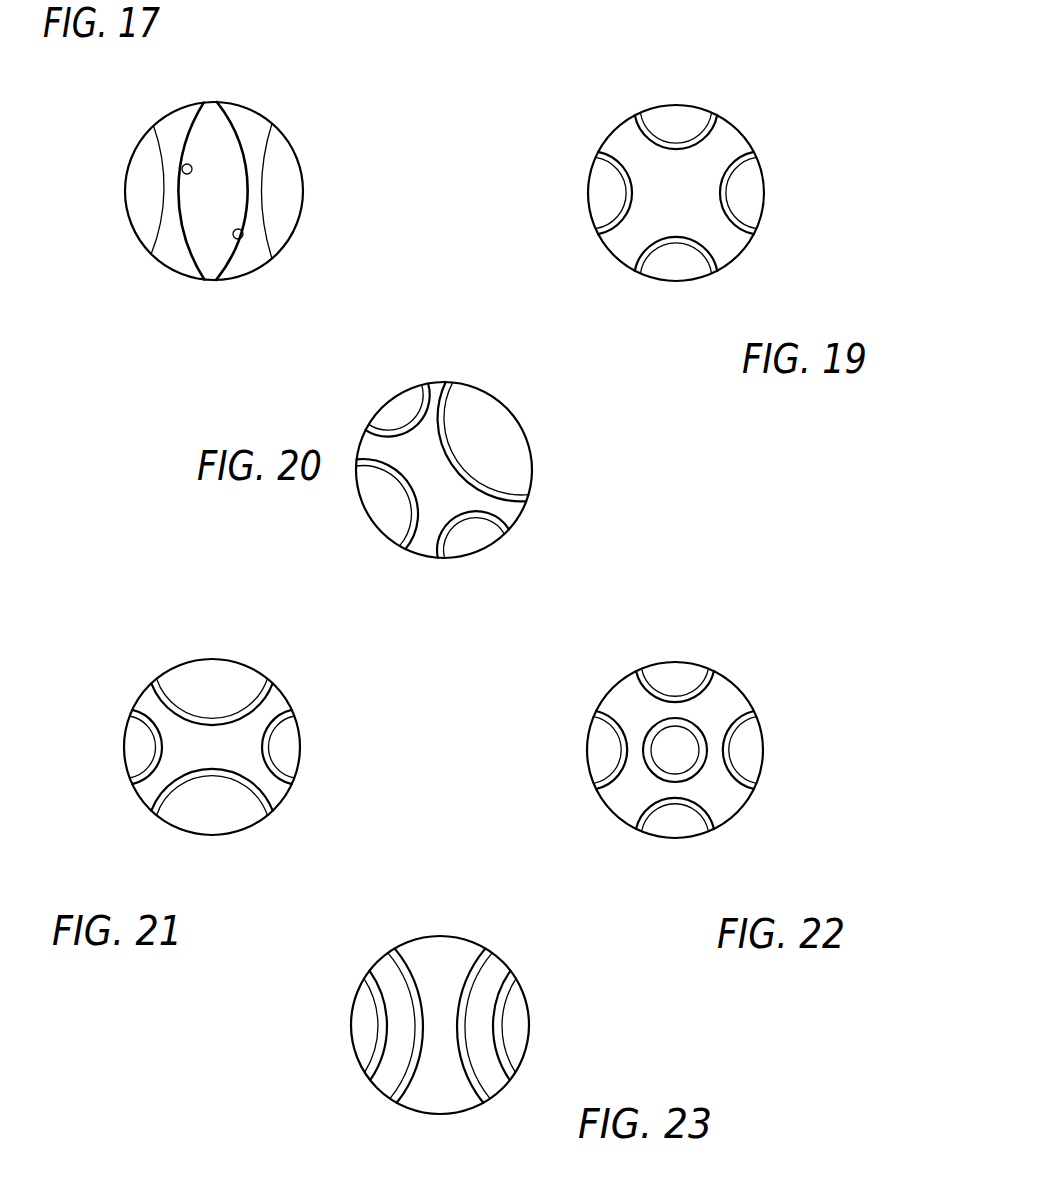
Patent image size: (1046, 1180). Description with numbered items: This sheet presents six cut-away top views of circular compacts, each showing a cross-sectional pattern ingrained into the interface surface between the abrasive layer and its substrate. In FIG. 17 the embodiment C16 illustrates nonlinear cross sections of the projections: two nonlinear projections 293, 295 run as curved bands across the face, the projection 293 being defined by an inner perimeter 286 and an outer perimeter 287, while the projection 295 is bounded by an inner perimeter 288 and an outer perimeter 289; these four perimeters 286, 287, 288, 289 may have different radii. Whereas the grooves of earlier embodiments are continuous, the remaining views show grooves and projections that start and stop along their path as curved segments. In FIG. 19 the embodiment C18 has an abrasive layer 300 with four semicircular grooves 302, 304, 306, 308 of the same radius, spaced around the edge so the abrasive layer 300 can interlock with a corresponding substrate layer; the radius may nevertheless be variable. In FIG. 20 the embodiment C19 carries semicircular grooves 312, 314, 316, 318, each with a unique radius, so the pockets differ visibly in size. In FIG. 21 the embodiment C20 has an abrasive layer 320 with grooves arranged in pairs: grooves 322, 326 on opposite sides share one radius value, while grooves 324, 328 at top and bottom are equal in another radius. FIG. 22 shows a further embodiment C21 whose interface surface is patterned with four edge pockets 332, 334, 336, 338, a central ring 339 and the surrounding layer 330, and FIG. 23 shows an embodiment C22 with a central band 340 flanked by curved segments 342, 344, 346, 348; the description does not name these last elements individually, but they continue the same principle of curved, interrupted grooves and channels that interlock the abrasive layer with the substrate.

In FIG. 17, the embodiment with nonlinear projection cross sections C16 is at (211, 197).
In FIG. 17, the inner perimeter 286 is at (153, 218).
In FIG. 17, the outer perimeter 287 is at (183, 174).
In FIG. 17, the inner perimeter 288 is at (240, 239).
In FIG. 17, the outer perimeter 289 is at (263, 187).
In FIG. 17, the nonlinear projection 293 is at (182, 127).
In FIG. 17, the nonlinear projection 295 is at (253, 125).
In FIG. 19, the embodiment with equal-radius semicircular grooves C18 is at (677, 188).
In FIG. 19, the abrasive layer 300 is at (662, 208).
In FIG. 19, the semicircular groove 302 is at (623, 193).
In FIG. 19, the semicircular groove 304 is at (677, 143).
In FIG. 19, the semicircular groove 306 is at (730, 190).
In FIG. 19, the semicircular groove 308 is at (673, 243).
In FIG. 20, the embodiment with unique-radius semicircular grooves C19 is at (468, 462).
In FIG. 20, the semicircular groove 312 is at (382, 500).
In FIG. 20, the semicircular groove 314 is at (397, 418).
In FIG. 20, the semicircular groove 316 is at (435, 395).
In FIG. 20, the semicircular groove 318 is at (465, 523).
In FIG. 21, the embodiment with paired equal-radius grooves C20 is at (209, 738).
In FIG. 21, the abrasive layer 320 is at (223, 745).
In FIG. 21, the groove 322 is at (150, 742).
In FIG. 21, the groove 324 is at (207, 722).
In FIG. 21, the groove 326 is at (265, 747).
In FIG. 21, the groove 328 is at (205, 772).
In FIG. 22, the ball C21 is at (677, 730).
In FIG. 22, the ball body 330 is at (720, 793).
In FIG. 22, the pocket 332 is at (608, 745).
In FIG. 22, the pocket 334 is at (672, 685).
In FIG. 22, the pocket 336 is at (737, 750).
In FIG. 22, the pocket 338 is at (677, 818).
In FIG. 22, the central recess 339 is at (675, 745).
In FIG. 23, the ball C22 is at (433, 996).
In FIG. 23, the central land 340 is at (438, 967).
In FIG. 23, the groove 342 is at (372, 1017).
In FIG. 23, the groove 344 is at (398, 960).
In FIG. 23, the groove 346 is at (477, 968).
In FIG. 23, the groove 348 is at (505, 1028).